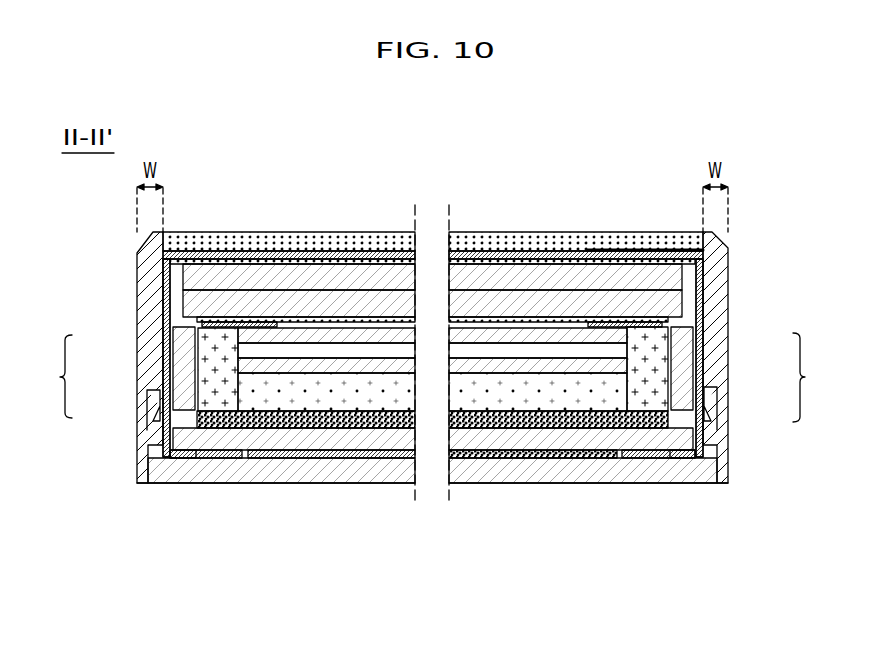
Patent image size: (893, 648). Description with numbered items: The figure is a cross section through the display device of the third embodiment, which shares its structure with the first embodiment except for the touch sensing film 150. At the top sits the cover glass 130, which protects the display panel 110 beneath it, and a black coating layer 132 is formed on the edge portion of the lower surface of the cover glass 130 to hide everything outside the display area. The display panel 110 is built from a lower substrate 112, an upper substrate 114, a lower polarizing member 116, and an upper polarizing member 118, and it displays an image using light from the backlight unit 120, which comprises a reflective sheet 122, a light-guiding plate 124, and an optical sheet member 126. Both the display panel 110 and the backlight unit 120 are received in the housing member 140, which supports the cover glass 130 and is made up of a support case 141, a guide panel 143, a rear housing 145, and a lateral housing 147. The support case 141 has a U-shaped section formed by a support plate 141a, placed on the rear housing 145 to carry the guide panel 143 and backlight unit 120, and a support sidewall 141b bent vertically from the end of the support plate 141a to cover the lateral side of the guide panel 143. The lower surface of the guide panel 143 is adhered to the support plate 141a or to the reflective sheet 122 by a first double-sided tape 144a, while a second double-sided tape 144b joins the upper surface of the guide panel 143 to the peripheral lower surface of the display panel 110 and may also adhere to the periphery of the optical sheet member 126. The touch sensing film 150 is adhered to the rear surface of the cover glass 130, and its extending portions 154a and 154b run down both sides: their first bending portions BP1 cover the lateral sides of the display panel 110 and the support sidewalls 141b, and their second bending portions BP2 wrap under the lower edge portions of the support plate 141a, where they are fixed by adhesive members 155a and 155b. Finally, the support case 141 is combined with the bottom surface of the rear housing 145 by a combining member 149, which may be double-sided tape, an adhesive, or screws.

The display panel 110 is at (432, 231).
The lower substrate 112 is at (357, 303).
The upper substrate 114 is at (320, 277).
The lower polarizing member 116 is at (394, 318).
The upper polarizing member 118 is at (277, 262).
The backlight unit 120 is at (432, 445).
The reflective sheet 122 is at (583, 421).
The light-guiding plate 124 is at (543, 389).
The optical sheet member 126 is at (512, 366).
The cover glass 130 is at (234, 240).
The black coating layer 132 is at (193, 252).
The housing member 140 is at (143, 575).
The support case 141 is at (294, 449).
The support plate 141a is at (255, 440).
The support sidewall 141b is at (188, 400).
The guide panel 143 is at (240, 393).
The first double-sided tape 144a is at (647, 413).
The second double-sided tape 144b is at (695, 323).
The rear housing 145 is at (343, 473).
The lateral housing 147 is at (143, 472).
The combining member 149 is at (378, 458).
The touch sensing film 150 is at (507, 257).
The extending portion 154a is at (97, 358).
The extending portion 154b is at (769, 358).
The adhesive member 155a is at (183, 455).
The adhesive member 155b is at (673, 452).
The first bending portion BP1 is at (167, 333).
The second bending portion BP2 is at (195, 447).